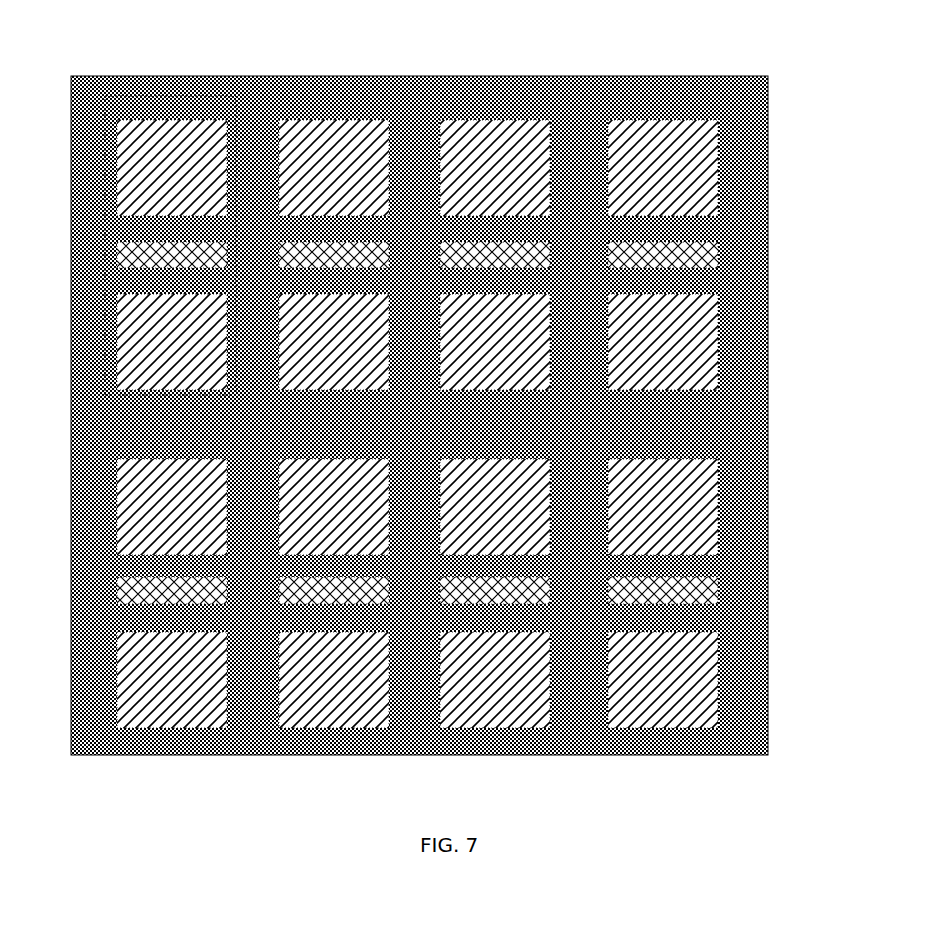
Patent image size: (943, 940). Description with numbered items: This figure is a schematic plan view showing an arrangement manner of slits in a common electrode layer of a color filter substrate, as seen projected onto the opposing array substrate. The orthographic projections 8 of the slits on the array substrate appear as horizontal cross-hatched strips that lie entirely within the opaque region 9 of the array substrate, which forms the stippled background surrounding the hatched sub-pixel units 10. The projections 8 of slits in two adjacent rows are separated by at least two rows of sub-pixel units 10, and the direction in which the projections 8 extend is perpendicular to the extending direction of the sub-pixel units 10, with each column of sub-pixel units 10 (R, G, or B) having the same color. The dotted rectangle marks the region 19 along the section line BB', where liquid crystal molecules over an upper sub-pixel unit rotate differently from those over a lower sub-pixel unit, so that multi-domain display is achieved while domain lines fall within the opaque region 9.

The orthographic projections 8 is at (418, 423).
The opaque region 9 is at (762, 416).
The sub-pixel units 10 is at (471, 410).
The region 19 is at (236, 100).